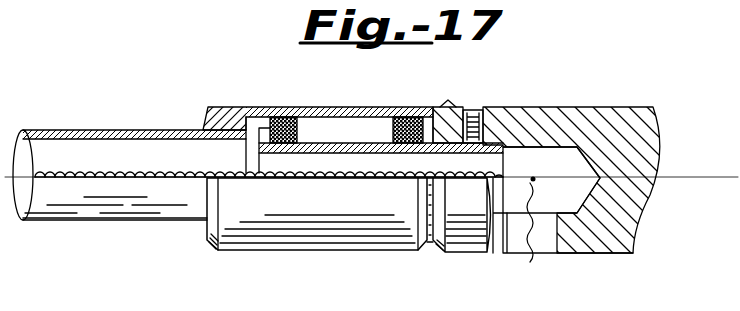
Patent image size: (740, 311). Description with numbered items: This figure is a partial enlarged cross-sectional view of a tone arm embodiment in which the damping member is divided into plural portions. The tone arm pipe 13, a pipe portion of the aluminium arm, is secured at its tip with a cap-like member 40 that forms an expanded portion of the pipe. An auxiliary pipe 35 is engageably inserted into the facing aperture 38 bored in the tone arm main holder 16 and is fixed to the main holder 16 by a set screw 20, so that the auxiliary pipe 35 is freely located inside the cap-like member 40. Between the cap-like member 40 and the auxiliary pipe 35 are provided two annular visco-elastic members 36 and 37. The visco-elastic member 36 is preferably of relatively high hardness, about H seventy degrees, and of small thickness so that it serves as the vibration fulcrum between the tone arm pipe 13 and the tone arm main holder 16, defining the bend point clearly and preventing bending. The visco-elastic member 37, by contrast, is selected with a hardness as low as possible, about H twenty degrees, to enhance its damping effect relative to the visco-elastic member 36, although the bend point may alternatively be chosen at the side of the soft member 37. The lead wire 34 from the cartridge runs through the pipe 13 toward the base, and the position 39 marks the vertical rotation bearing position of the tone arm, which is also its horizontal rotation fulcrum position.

The pipe portion of the aluminium arm 13 is at (130, 128).
The cap-like member 40 is at (230, 106).
The visco-elastic member 36 is at (292, 117).
The visco-elastic member 37 is at (428, 108).
The set screw 20 is at (470, 108).
The tone arm main holder 16 is at (553, 108).
The facing aperture 38 is at (563, 158).
The vertical rotation bearing position 39 is at (536, 181).
The auxiliary pipe 35 is at (317, 160).
The lead wire 34 is at (383, 180).